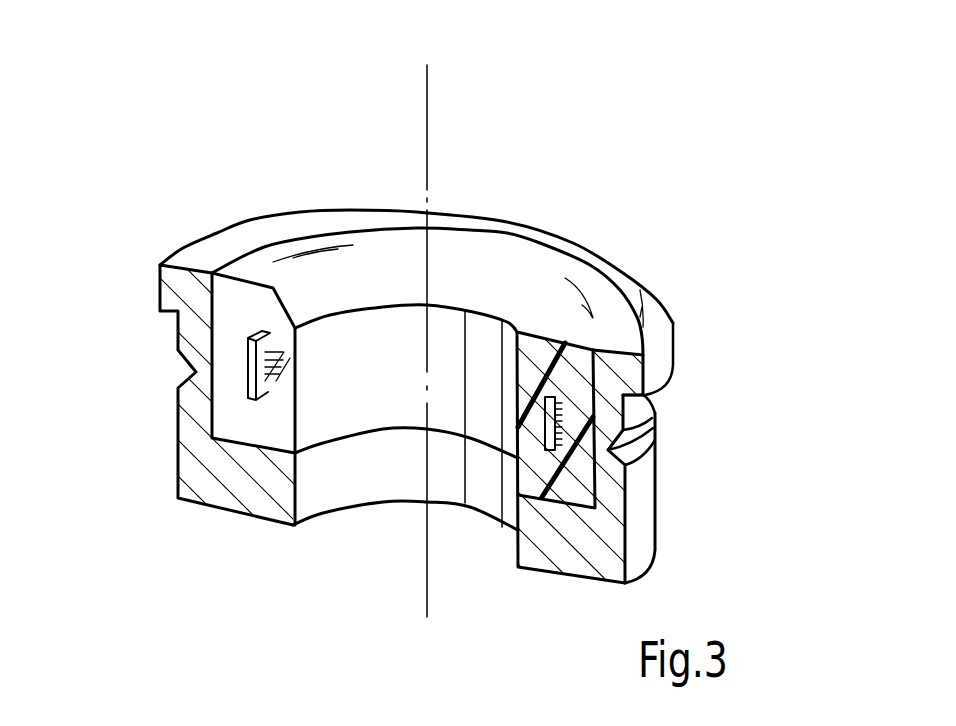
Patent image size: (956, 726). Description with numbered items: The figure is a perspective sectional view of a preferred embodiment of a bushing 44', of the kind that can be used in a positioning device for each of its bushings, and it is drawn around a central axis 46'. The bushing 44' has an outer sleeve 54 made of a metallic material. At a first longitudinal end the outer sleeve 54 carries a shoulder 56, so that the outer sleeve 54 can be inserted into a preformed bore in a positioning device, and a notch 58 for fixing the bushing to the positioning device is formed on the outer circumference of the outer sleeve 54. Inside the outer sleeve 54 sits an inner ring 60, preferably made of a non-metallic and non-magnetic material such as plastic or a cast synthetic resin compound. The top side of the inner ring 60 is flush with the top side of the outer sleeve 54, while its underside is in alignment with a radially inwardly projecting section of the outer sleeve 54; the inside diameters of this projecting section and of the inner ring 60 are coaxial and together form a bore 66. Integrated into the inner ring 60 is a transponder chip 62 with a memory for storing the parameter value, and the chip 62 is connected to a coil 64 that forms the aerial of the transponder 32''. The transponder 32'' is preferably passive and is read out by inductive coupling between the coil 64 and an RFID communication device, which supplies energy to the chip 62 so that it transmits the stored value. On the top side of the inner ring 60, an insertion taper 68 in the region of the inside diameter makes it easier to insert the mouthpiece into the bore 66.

The central axis 46' is at (500, 322).
The bushing 44' is at (478, 363).
The insertion taper 68 is at (300, 295).
The coil 64 is at (252, 354).
The transponder chip 62 is at (285, 395).
The bore 66 is at (372, 392).
The inner ring 60 is at (568, 477).
The transponder 32'' is at (703, 353).
The shoulder 56 is at (630, 375).
The notch 58 is at (637, 440).
The outer sleeve 54 is at (612, 545).